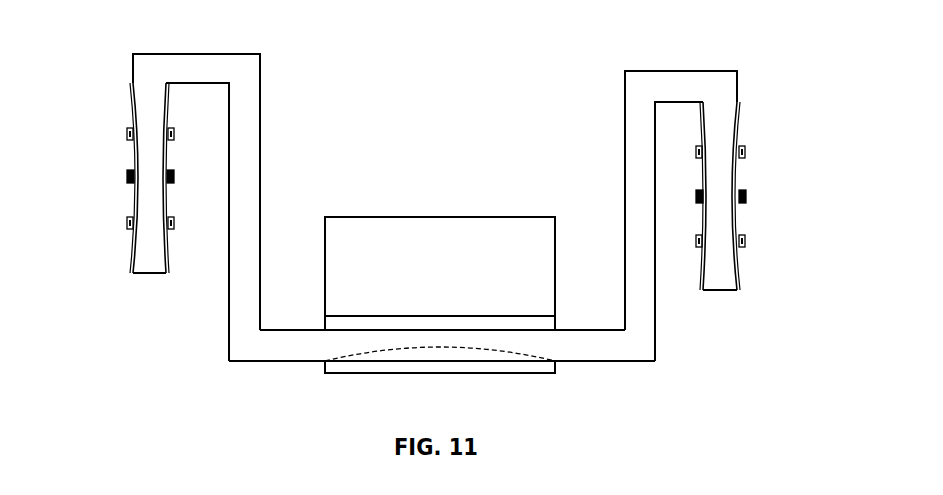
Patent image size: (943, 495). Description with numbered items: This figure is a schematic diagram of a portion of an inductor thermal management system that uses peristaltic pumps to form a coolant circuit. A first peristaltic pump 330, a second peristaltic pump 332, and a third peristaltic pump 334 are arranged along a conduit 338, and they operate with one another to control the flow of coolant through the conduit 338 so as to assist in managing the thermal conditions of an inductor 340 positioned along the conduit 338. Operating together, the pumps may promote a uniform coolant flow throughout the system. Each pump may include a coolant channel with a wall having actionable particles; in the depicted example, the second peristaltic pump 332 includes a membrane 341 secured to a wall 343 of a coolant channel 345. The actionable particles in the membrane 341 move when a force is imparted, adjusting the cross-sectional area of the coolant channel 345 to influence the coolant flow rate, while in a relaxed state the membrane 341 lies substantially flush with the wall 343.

The first peristaltic pump 330 is at (438, 216).
The second peristaltic pump 332 is at (320, 362).
The third peristaltic pump 334 is at (127, 102).
The conduit 338 is at (641, 71).
The inductor 340 is at (525, 216).
The membrane 341 is at (471, 349).
The wall 343 is at (532, 366).
The coolant channel 345 is at (548, 329).